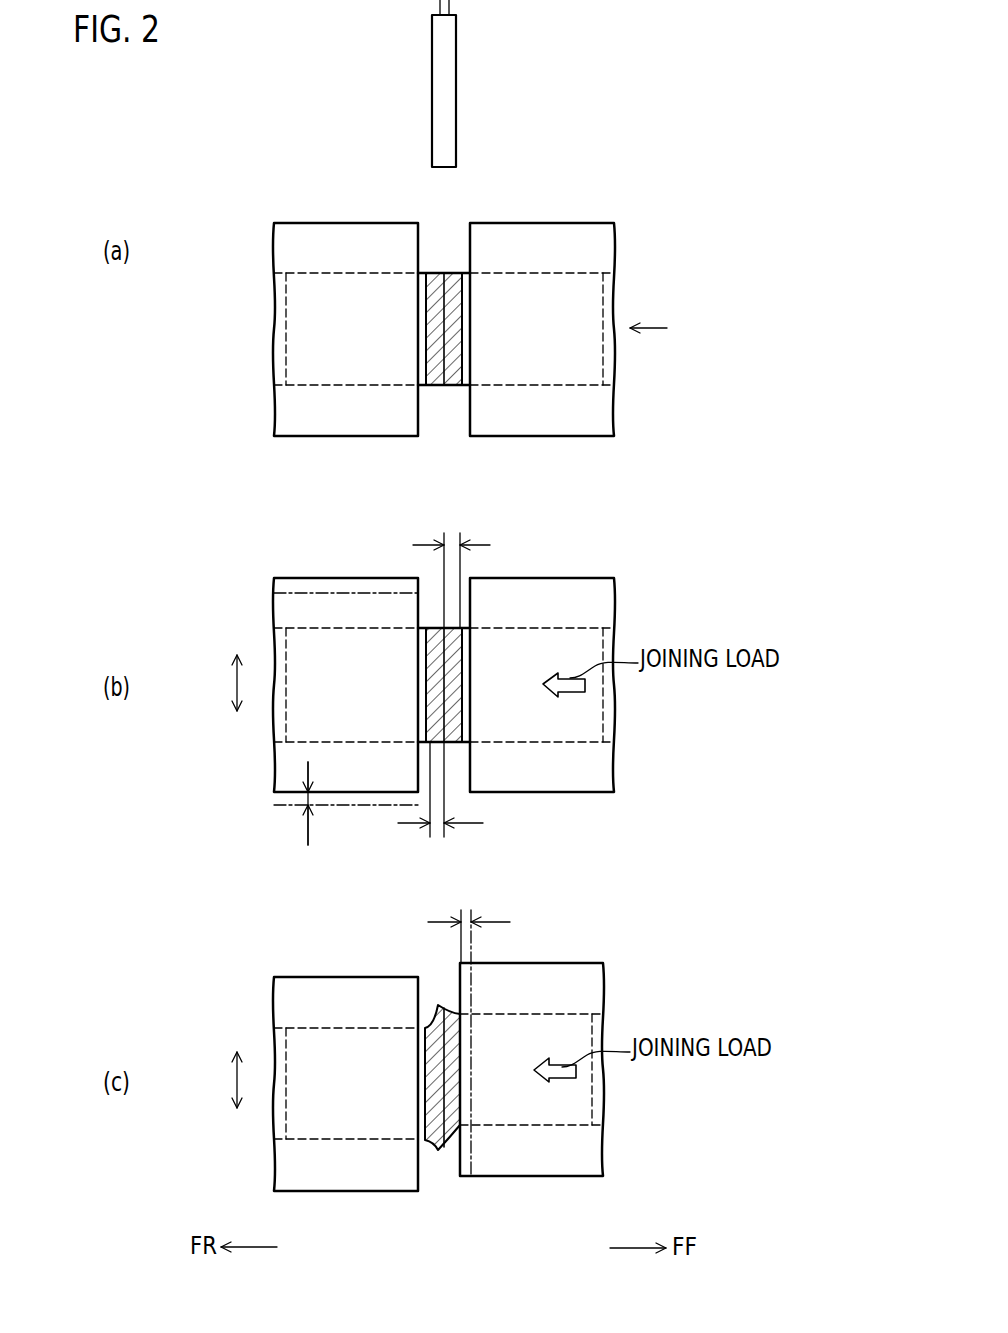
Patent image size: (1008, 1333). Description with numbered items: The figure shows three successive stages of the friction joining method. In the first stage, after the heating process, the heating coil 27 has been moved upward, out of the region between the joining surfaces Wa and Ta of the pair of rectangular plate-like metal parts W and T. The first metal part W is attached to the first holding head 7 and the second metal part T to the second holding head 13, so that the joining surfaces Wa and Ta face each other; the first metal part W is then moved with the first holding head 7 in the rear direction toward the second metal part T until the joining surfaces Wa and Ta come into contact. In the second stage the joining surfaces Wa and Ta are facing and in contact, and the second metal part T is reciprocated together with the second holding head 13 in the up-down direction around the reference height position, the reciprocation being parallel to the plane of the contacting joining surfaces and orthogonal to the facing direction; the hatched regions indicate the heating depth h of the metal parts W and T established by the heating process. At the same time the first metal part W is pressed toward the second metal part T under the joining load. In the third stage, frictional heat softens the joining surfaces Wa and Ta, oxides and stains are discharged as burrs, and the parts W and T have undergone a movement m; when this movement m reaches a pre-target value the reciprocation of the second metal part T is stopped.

The heating coil 27 is at (446, 58).
The second holding head 13 is at (338, 222).
The first holding head 7 is at (544, 222).
The second metal part T is at (428, 272).
The first metal part W is at (460, 272).
The joining surface Ta is at (447, 312).
The joining surface Wa is at (441, 348).
The heating depth h is at (444, 677).
The movement m is at (469, 927).